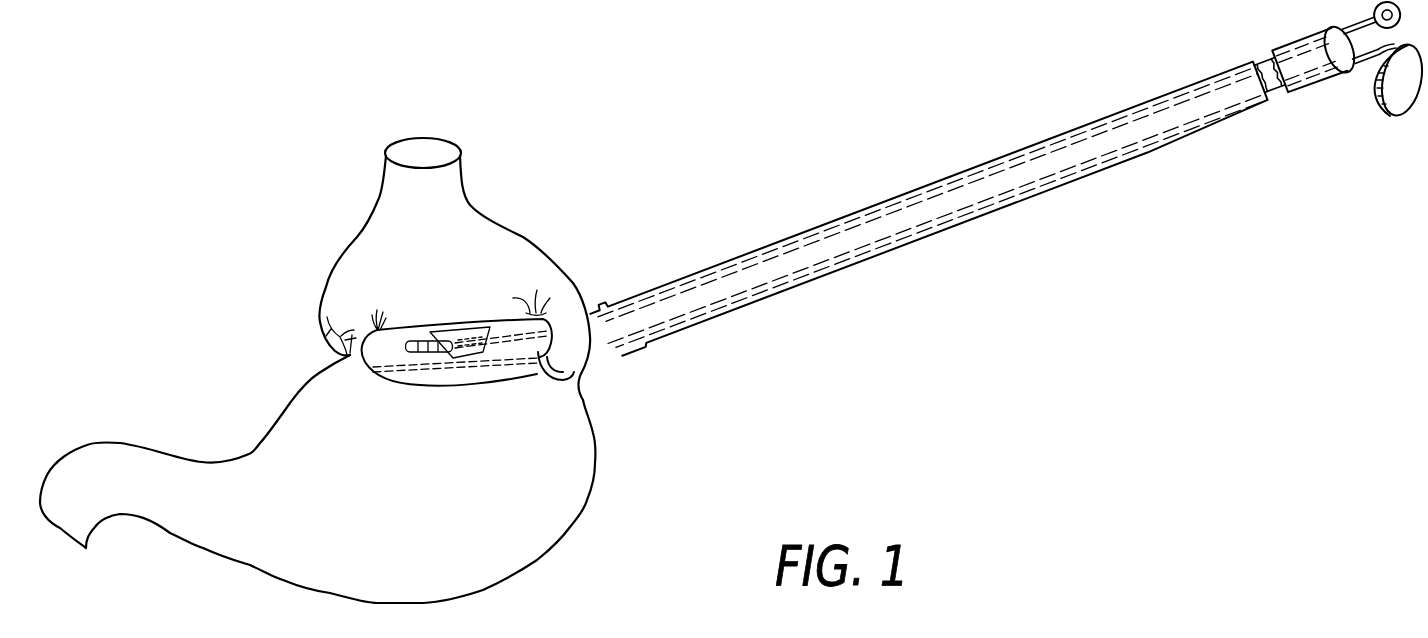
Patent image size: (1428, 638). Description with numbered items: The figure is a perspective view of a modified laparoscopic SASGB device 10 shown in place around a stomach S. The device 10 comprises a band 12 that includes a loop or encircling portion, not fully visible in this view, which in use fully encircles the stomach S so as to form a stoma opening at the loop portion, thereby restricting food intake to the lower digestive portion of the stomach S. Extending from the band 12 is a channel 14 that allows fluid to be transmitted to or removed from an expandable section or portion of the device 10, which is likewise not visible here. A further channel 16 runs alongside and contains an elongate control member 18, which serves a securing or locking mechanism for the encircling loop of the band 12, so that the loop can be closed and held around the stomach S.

The stomach S is at (487, 248).
The SASGB device 10 is at (670, 334).
The band 12 is at (929, 209).
The channel 14 is at (928, 195).
The further channel 16 is at (937, 222).
The elongate control member 18 is at (1269, 75).